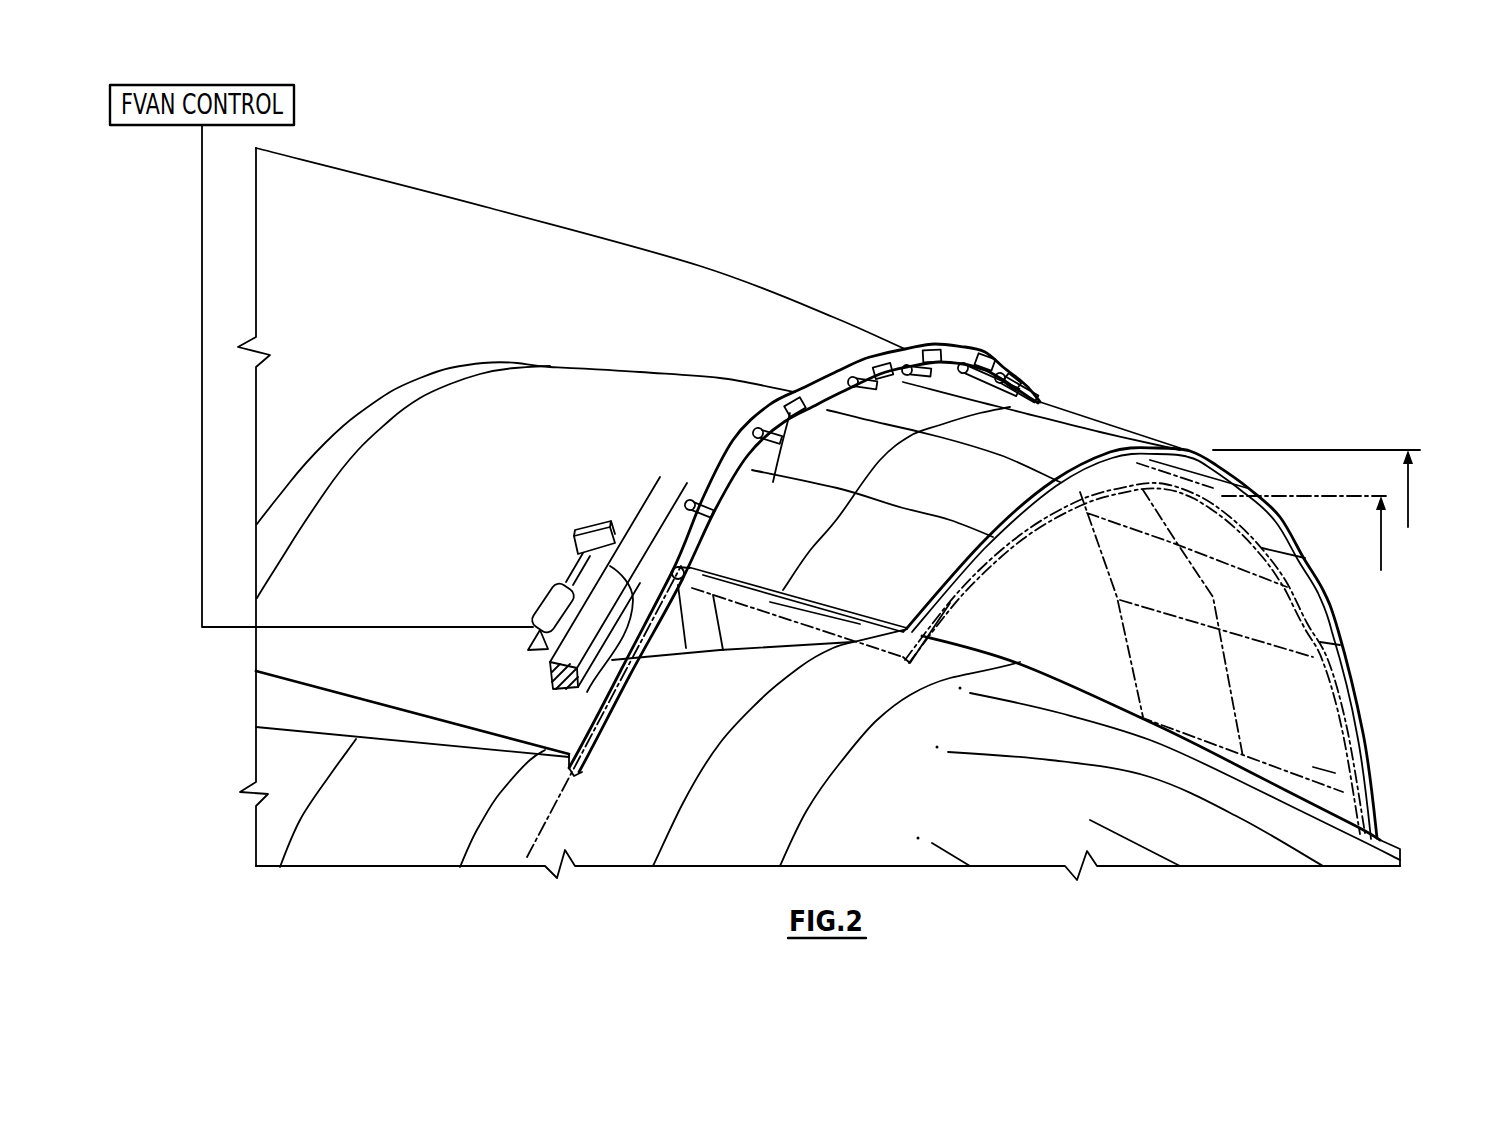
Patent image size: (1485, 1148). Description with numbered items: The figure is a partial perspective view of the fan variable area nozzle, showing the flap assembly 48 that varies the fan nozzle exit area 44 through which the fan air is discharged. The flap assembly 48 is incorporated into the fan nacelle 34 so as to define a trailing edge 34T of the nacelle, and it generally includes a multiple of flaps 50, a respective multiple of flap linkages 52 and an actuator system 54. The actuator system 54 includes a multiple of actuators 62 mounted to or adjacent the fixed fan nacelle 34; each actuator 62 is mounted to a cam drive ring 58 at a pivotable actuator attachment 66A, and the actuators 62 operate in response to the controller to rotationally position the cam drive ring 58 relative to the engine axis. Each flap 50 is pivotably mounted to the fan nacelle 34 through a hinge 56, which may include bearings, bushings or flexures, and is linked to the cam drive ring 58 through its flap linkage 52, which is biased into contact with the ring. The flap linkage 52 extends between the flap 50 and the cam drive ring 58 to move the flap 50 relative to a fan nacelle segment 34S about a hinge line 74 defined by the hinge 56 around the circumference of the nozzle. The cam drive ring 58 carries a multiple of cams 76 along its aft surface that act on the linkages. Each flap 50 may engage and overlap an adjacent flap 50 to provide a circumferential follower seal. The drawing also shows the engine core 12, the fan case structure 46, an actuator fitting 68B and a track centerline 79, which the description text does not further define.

The engine core 12 is at (1165, 825).
The fan nacelle 34 is at (653, 311).
The fan nacelle segment 34S is at (575, 737).
The trailing edge 34T is at (943, 590).
The fan nozzle exit area 44 is at (1408, 527).
The fan case structure 46 is at (480, 704).
The flap assembly 48 is at (749, 600).
The flap 50 is at (942, 422).
The flap linkage 52 is at (786, 478).
The actuator system 54 is at (565, 515).
The hinge 56 is at (678, 600).
The cam drive ring 58 is at (759, 404).
The actuator 62 is at (547, 607).
The pivotable actuator attachment 66A is at (623, 508).
The actuator fitting 68B is at (530, 652).
The hinge line 74 is at (690, 573).
The cam 76 is at (757, 420).
The track centerline 79 is at (605, 712).